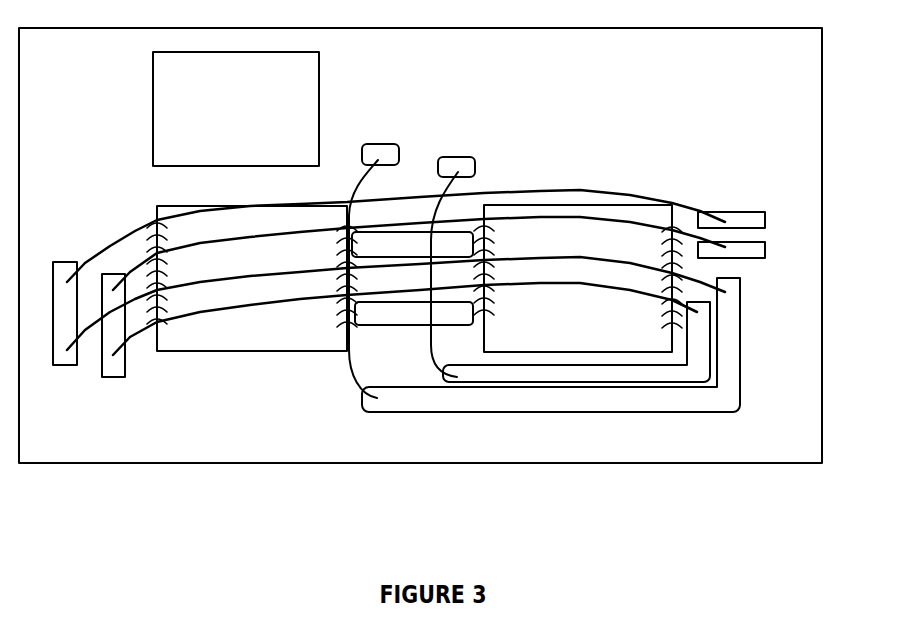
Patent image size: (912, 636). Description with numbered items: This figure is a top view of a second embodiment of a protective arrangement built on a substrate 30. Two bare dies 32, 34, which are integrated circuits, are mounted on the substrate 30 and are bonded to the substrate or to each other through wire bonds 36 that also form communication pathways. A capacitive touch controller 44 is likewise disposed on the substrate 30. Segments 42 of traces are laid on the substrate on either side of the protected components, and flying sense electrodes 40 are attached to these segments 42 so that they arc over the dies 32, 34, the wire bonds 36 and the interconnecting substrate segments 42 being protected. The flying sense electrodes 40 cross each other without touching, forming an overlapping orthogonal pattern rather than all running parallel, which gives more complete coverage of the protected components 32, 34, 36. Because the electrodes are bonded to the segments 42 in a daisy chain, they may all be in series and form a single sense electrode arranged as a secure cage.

The substrate 30 is at (673, 120).
The bare die 32 is at (183, 203).
The bare die 34 is at (548, 202).
The wire bonds 36 is at (486, 314).
The flying sense electrodes 40 is at (249, 209).
The segments 42 is at (403, 142).
The capacitive touch controller 44 is at (323, 90).